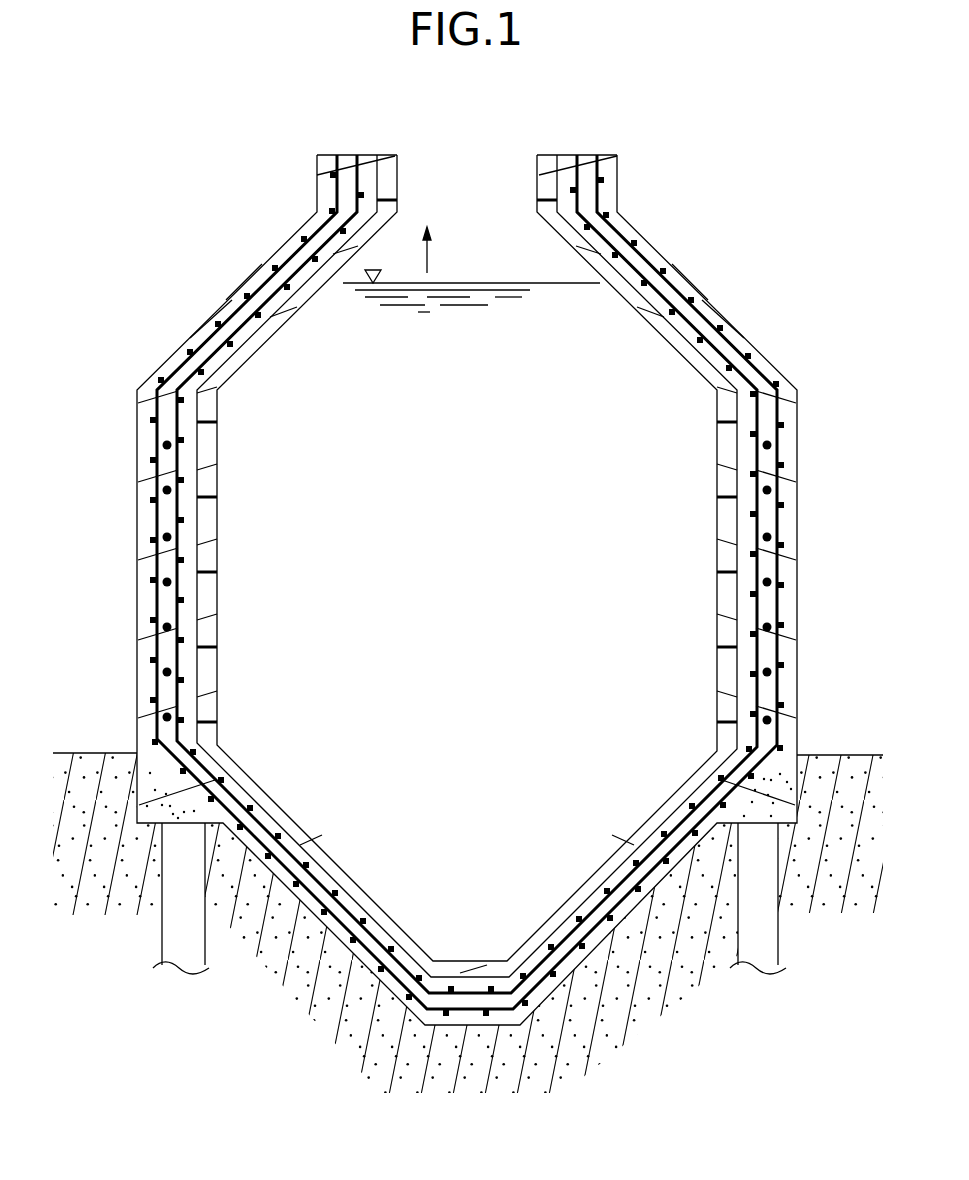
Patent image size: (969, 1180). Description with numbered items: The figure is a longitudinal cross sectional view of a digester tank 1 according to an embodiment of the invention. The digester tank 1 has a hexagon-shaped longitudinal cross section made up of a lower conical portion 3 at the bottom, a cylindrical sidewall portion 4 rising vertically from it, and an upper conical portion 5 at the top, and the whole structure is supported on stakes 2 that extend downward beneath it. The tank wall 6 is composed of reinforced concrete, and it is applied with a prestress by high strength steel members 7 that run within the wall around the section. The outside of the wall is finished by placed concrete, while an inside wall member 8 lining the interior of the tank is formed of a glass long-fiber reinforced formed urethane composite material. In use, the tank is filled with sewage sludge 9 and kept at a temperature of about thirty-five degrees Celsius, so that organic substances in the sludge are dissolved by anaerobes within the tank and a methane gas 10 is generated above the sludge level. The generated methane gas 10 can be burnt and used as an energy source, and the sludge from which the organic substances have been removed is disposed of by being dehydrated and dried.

The digester tank 1 is at (468, 586).
The stakes 2 is at (765, 940).
The lower conical portion 3 is at (312, 917).
The cylindrical sidewall portion 4 is at (136, 546).
The upper conical portion 5 is at (223, 305).
The tank wall 6 is at (801, 483).
The high strength steel members 7 is at (771, 441).
The inside wall member 8 is at (658, 328).
The sewage sludge 9 is at (456, 578).
The methane gas 10 is at (429, 257).